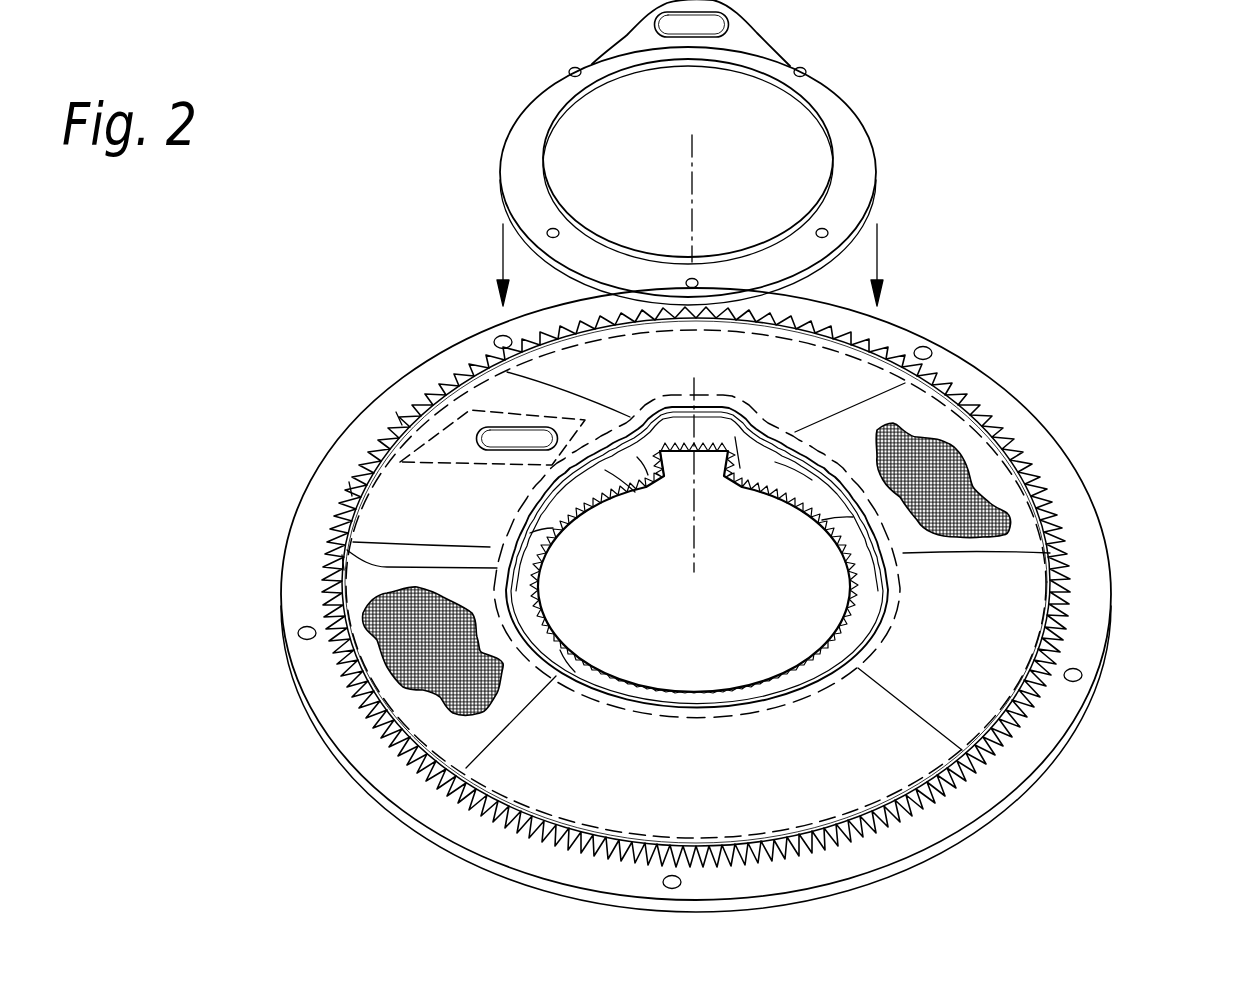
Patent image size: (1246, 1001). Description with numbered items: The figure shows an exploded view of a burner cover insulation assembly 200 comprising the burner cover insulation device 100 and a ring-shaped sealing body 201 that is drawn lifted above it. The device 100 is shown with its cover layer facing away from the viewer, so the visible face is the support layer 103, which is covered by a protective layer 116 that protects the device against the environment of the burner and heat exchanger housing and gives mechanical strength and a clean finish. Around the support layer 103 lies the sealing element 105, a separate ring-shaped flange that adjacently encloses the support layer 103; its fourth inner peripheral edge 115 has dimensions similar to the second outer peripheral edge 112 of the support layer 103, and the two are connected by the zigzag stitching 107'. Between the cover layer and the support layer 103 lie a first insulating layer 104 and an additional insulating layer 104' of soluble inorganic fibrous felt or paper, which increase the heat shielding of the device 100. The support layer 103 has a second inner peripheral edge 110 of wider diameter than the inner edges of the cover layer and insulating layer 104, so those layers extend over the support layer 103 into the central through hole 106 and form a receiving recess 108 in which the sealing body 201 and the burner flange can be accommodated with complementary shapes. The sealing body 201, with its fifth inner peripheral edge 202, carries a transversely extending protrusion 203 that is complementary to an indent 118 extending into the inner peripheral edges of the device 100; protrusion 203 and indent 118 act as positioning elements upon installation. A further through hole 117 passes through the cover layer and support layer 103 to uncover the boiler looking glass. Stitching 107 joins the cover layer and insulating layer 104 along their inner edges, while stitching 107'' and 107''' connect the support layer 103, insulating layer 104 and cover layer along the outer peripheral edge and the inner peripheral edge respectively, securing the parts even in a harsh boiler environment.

The burner cover insulation device 100 is at (1128, 533).
The support layer 103 is at (734, 407).
The insulating layer 104 is at (694, 568).
The additional insulating layer 104' is at (663, 474).
The sealing element 105 is at (1058, 437).
The through hole 106 is at (711, 601).
The stitching 107 is at (585, 513).
The stitching 107' is at (372, 379).
The stitching 107'' is at (303, 478).
The stitching 107''' is at (281, 540).
The receiving recess 108 is at (785, 475).
The second inner peripheral edge of support layer 110 is at (572, 672).
The second outer peripheral edge of support layer 112 is at (1020, 700).
The fourth inner peripheral edge of sealing element 115 is at (993, 425).
The protective layer 116 is at (905, 760).
The further through hole 117 is at (515, 445).
The indent 118 is at (707, 420).
The burner cover insulation assembly 200 is at (1020, 224).
The sealing body 201 is at (882, 125).
The fifth inner peripheral edge of sealing body 202 is at (556, 198).
The protrusion 203 is at (736, 14).